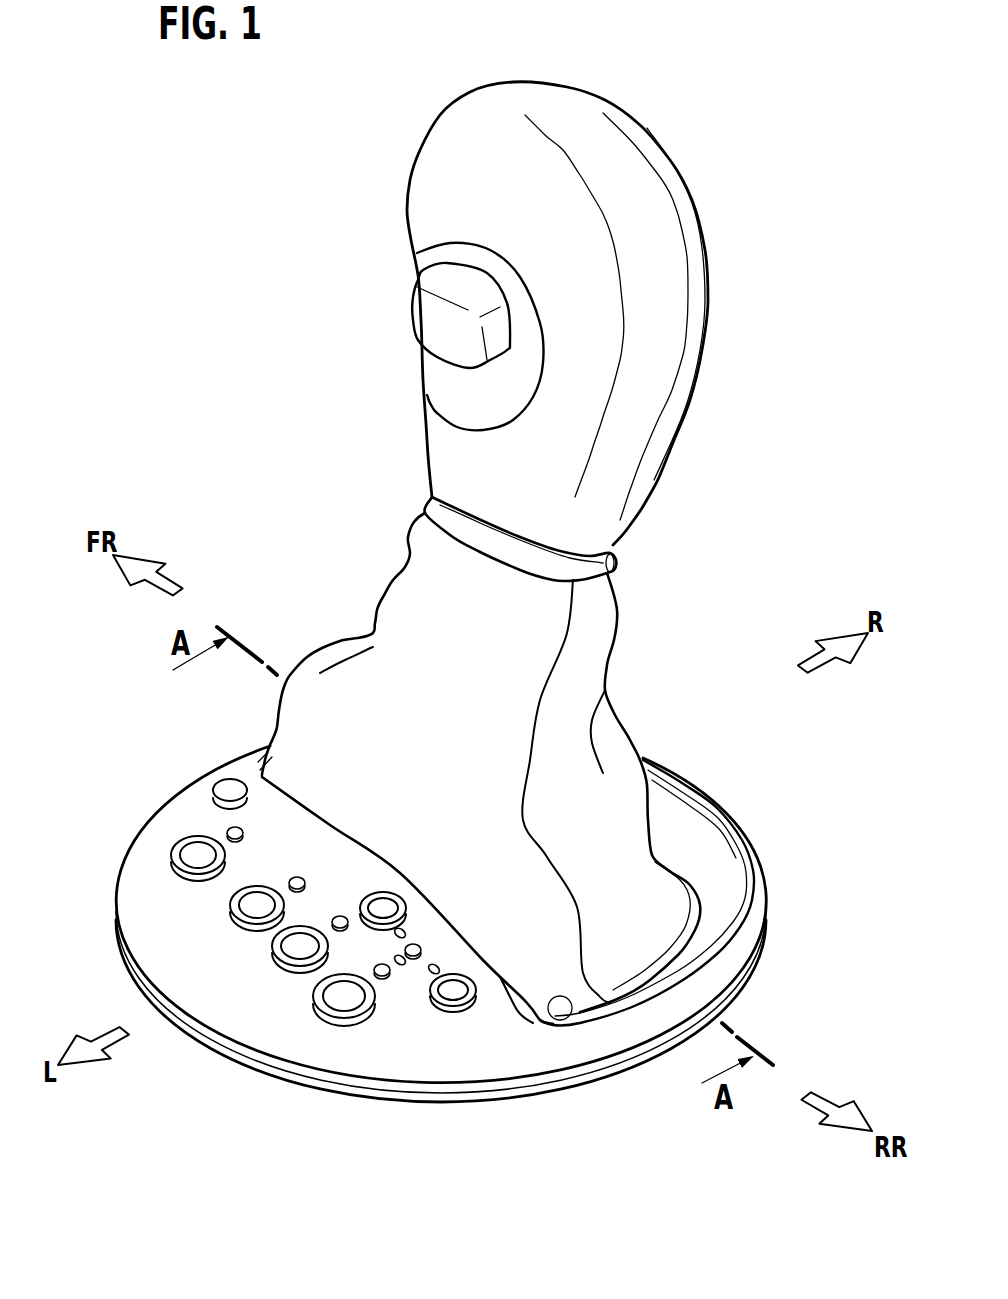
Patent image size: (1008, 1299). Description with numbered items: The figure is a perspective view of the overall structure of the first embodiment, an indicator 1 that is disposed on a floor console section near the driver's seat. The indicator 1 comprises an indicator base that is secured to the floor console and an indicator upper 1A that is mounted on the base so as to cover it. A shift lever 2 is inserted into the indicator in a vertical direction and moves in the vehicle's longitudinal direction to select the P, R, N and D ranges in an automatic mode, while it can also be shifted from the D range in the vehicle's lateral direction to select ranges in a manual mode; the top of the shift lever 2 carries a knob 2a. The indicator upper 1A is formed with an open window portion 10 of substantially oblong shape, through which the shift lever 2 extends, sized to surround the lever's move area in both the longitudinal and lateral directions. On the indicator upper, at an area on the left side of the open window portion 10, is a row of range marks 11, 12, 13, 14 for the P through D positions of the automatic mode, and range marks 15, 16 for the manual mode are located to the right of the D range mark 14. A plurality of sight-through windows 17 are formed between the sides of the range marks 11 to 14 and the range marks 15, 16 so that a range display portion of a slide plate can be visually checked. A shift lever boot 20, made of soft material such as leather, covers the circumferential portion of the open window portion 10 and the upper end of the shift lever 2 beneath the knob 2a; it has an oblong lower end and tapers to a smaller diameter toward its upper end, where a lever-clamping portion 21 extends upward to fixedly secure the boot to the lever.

The indicator 1 is at (739, 797).
The indicator upper 1A is at (772, 915).
The shift lever 2 is at (662, 481).
The knob 2a is at (693, 330).
The open window portion 10 is at (551, 1019).
The range mark 11 is at (195, 870).
The range mark 12 is at (258, 925).
The range mark 13 is at (300, 965).
The range mark 14 is at (344, 1012).
The range mark 15 is at (390, 905).
The range mark 16 is at (455, 985).
The sight-through windows 17 is at (340, 918).
The shift lever boot 20 is at (598, 636).
The lever-clamping portion 21 is at (610, 555).